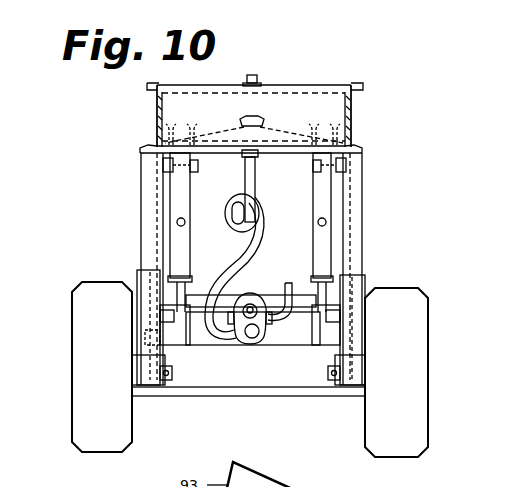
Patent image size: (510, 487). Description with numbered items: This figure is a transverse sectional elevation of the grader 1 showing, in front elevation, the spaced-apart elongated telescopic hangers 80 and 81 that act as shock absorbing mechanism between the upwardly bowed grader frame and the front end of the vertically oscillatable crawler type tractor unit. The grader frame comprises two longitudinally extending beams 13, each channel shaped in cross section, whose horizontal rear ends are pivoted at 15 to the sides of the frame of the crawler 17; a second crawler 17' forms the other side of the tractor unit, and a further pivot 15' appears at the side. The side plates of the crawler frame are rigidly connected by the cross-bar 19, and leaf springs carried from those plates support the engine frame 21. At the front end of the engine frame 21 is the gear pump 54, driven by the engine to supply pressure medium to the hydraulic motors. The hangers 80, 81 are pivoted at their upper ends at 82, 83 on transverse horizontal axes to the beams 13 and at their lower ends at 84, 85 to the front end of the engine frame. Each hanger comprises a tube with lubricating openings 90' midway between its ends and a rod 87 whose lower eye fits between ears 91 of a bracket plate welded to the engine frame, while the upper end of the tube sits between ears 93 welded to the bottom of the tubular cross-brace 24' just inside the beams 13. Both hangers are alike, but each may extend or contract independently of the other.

The apparatus 1 is at (506, 75).
The frame beam 13 is at (249, 116).
The pivot 15 is at (250, 393).
The bolt 15' is at (500, 356).
The crawler 17 is at (80, 367).
The crawler 17' is at (421, 367).
The cross-bar 19 is at (263, 397).
The engine frame 21 is at (216, 337).
The tubular cross-brace 24' is at (255, 101).
The gear pump 54 is at (253, 332).
The telescopic hanger 80 is at (199, 232).
The telescopic hanger 81 is at (312, 246).
The upper pivot 82 is at (165, 165).
The upper pivot 83 is at (340, 165).
The lower pivot 84 is at (165, 315).
The lower pivot 85 is at (345, 322).
The rod 87 is at (129, 324).
The lubricating opening 90' is at (198, 212).
The ears 91 is at (172, 337).
The ears 93 is at (160, 152).